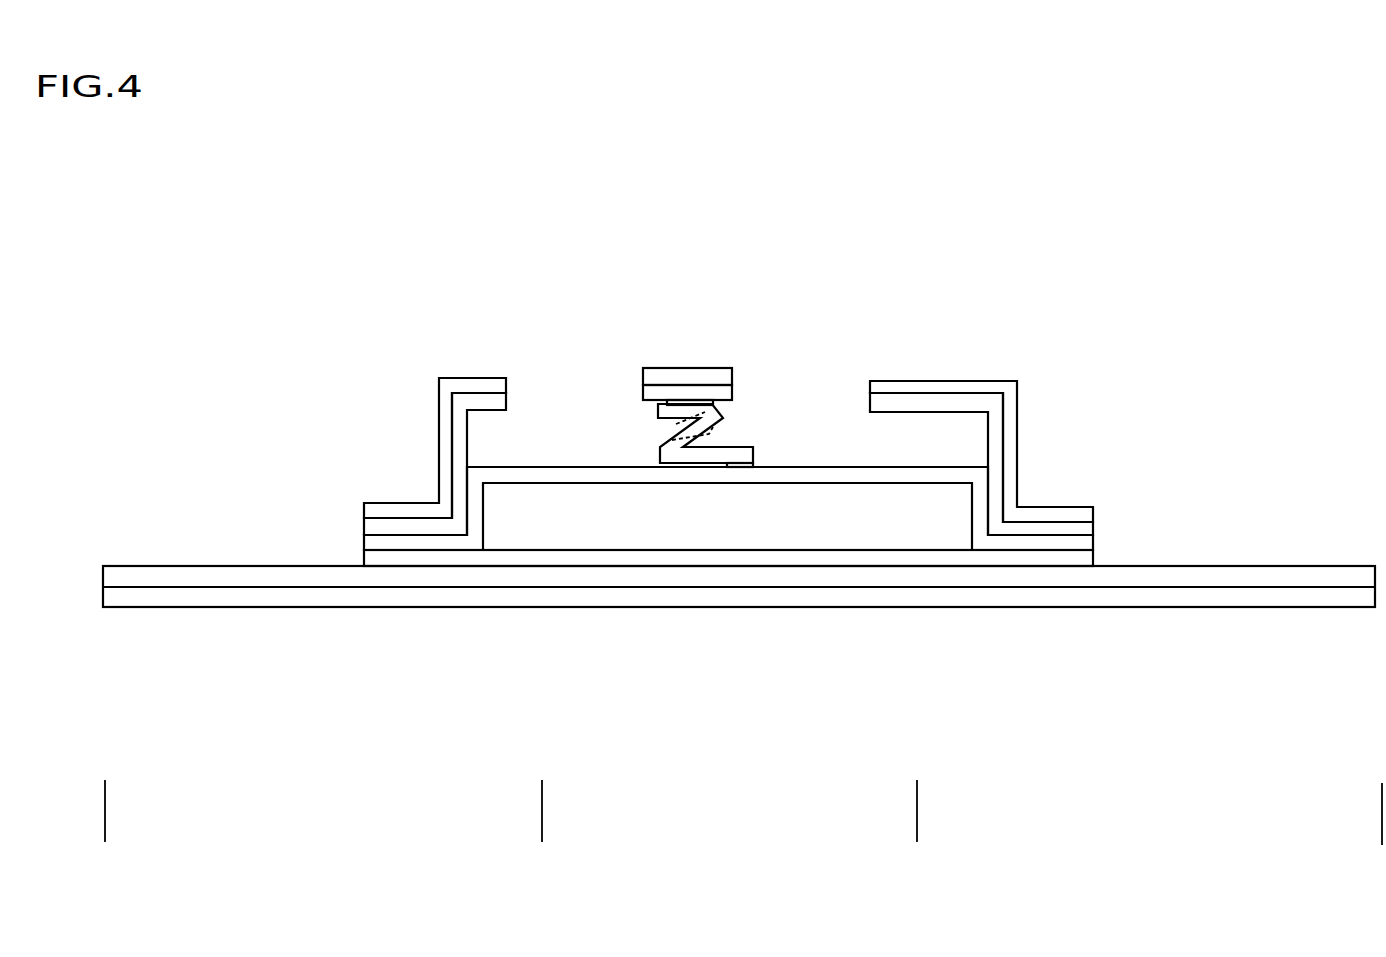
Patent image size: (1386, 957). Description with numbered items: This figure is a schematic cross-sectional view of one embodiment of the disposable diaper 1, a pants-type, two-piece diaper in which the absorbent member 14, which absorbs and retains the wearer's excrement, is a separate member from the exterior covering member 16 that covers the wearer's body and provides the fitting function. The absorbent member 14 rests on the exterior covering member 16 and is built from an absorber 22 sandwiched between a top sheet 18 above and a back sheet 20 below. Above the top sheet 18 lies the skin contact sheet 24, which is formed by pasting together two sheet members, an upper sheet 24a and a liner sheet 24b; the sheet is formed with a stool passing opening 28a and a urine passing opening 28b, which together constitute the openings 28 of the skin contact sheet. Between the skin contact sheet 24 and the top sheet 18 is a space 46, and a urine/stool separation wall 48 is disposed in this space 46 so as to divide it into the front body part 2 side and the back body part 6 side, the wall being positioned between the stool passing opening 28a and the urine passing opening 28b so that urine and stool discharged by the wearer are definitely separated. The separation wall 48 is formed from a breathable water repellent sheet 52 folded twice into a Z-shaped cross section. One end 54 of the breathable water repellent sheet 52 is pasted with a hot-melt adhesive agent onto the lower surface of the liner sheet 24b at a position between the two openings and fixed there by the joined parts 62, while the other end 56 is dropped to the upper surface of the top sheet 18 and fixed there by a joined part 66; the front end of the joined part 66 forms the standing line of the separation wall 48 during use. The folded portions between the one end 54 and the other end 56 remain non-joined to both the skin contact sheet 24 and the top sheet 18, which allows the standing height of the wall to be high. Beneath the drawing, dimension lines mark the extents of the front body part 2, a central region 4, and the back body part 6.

The disposable diaper 1 is at (1170, 202).
The front body part 2 is at (542, 812).
The second region 4 is at (917, 812).
The back body part 6 is at (1382, 812).
The absorbent member 14 is at (728, 608).
The exterior covering member 16 is at (1015, 573).
The top sheet 18 is at (483, 508).
The back sheet 20 is at (622, 553).
The absorber 22 is at (553, 520).
The skin contact sheet 24 is at (728, 359).
The upper sheet 24a is at (458, 378).
The liner sheet 24b is at (492, 403).
The joint portion 28 is at (721, 431).
The stool passing opening 28a is at (789, 360).
The urine passing opening 28b is at (590, 358).
The space 46 is at (483, 448).
The urine/stool separation wall 48 is at (710, 428).
The breathable water repellent sheet 52 is at (690, 455).
The one end 54 is at (659, 533).
The other end 56 is at (768, 449).
The joined parts 62 is at (658, 403).
The joined part 66 is at (738, 464).